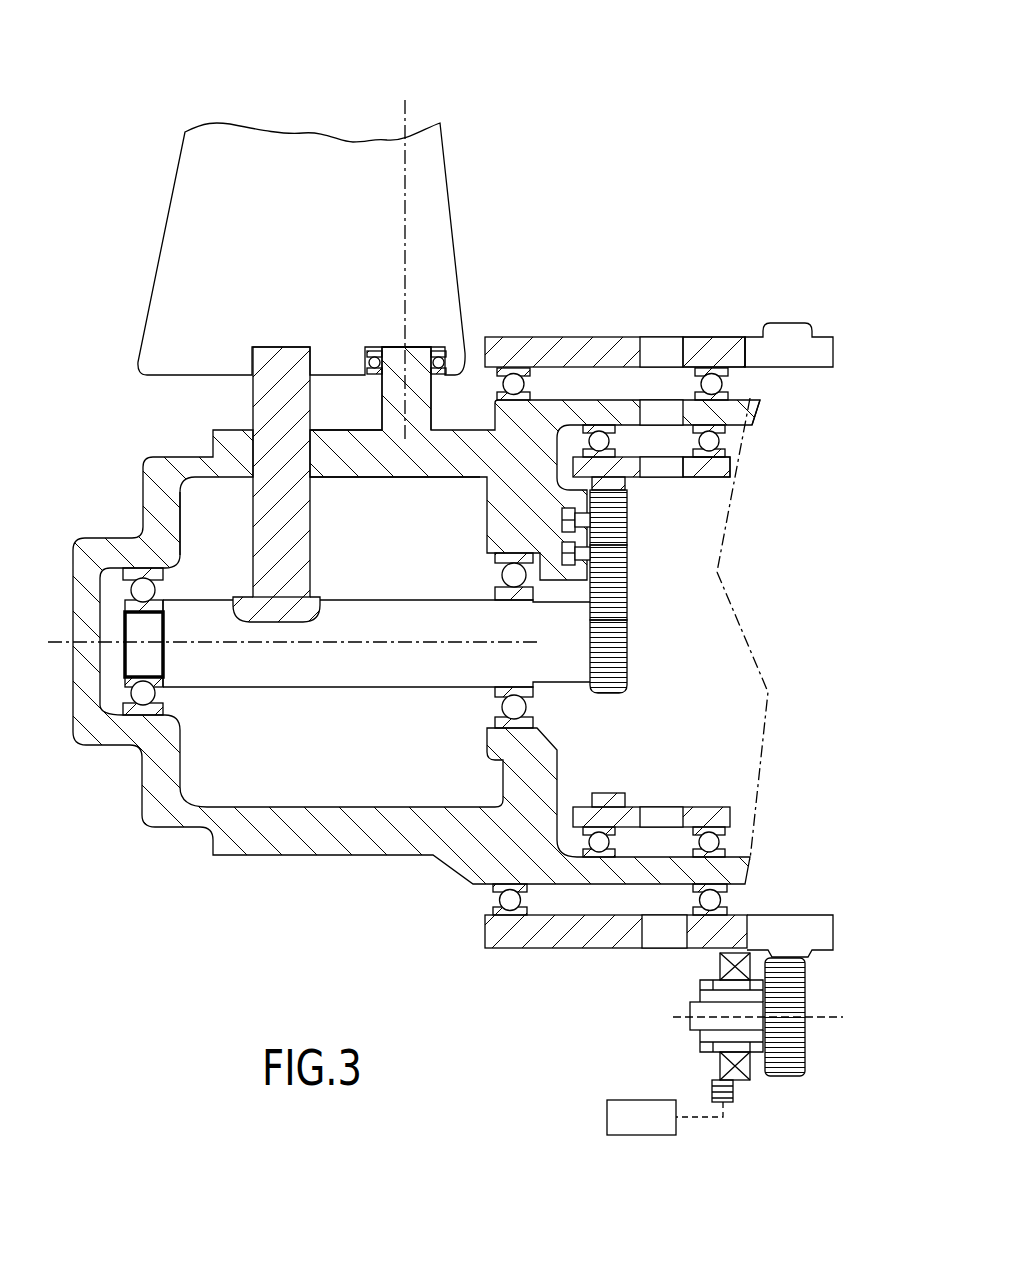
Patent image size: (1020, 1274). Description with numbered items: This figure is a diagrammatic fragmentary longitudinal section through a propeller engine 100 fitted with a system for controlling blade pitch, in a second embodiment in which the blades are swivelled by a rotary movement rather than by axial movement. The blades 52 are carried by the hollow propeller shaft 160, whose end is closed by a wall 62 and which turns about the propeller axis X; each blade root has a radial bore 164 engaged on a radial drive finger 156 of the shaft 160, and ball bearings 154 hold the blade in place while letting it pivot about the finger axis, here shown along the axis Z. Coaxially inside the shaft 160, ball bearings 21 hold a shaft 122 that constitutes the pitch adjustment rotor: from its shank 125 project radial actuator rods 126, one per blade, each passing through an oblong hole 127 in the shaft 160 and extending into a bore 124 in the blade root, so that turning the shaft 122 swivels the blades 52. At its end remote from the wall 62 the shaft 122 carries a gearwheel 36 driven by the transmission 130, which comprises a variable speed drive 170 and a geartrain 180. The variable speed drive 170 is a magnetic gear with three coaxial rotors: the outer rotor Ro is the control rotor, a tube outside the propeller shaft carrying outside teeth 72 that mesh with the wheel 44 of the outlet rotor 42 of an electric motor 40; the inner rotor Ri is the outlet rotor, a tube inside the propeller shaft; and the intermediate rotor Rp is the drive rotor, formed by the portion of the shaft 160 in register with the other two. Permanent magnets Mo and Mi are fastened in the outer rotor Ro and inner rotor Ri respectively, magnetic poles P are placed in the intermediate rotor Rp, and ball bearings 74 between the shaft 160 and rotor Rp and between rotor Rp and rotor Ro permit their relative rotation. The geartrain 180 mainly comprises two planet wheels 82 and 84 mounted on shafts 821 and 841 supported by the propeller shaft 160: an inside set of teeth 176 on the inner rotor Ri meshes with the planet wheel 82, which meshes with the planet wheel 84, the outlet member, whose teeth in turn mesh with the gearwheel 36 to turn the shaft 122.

The drive assembly 100 is at (293, 70).
The blade 52 is at (205, 240).
The variable speed drive 170 is at (617, 244).
The propeller shaft 160 is at (498, 306).
The outside set of teeth 72 is at (783, 337).
The radial bore 164 is at (378, 352).
The ball bearings 154 is at (440, 352).
The bore 124 is at (268, 358).
The oblong hole 127 is at (297, 421).
The radial drive finger 156 is at (415, 389).
The ball bearings 74 is at (526, 381).
The permanent magnets Mo is at (658, 350).
The outer rotor Ro is at (705, 350).
The magnetic poles P is at (660, 410).
The intermediate rotor Rp is at (740, 405).
The permanent magnets Mi is at (667, 468).
The inner rotor Ri is at (733, 463).
The shaft 122 is at (225, 588).
The radial actuator rod 126 is at (300, 545).
The wall 62 is at (80, 580).
The shaft 821 is at (574, 518).
The shaft 841 is at (574, 550).
The inside set of teeth 176 is at (633, 485).
The planet wheel 82 is at (630, 514).
The planet wheel 84 is at (630, 580).
The gearwheel 36 is at (627, 680).
The geartrain 180 is at (765, 520).
The transmission 130 is at (777, 648).
The propeller axis X is at (291, 629).
The vertical axis Z is at (403, 118).
The ball bearings 21 is at (160, 696).
The shank 125 is at (345, 678).
The outlet rotor 42 is at (686, 999).
The wheel 44 is at (805, 1045).
The electric motor 40 is at (750, 1088).